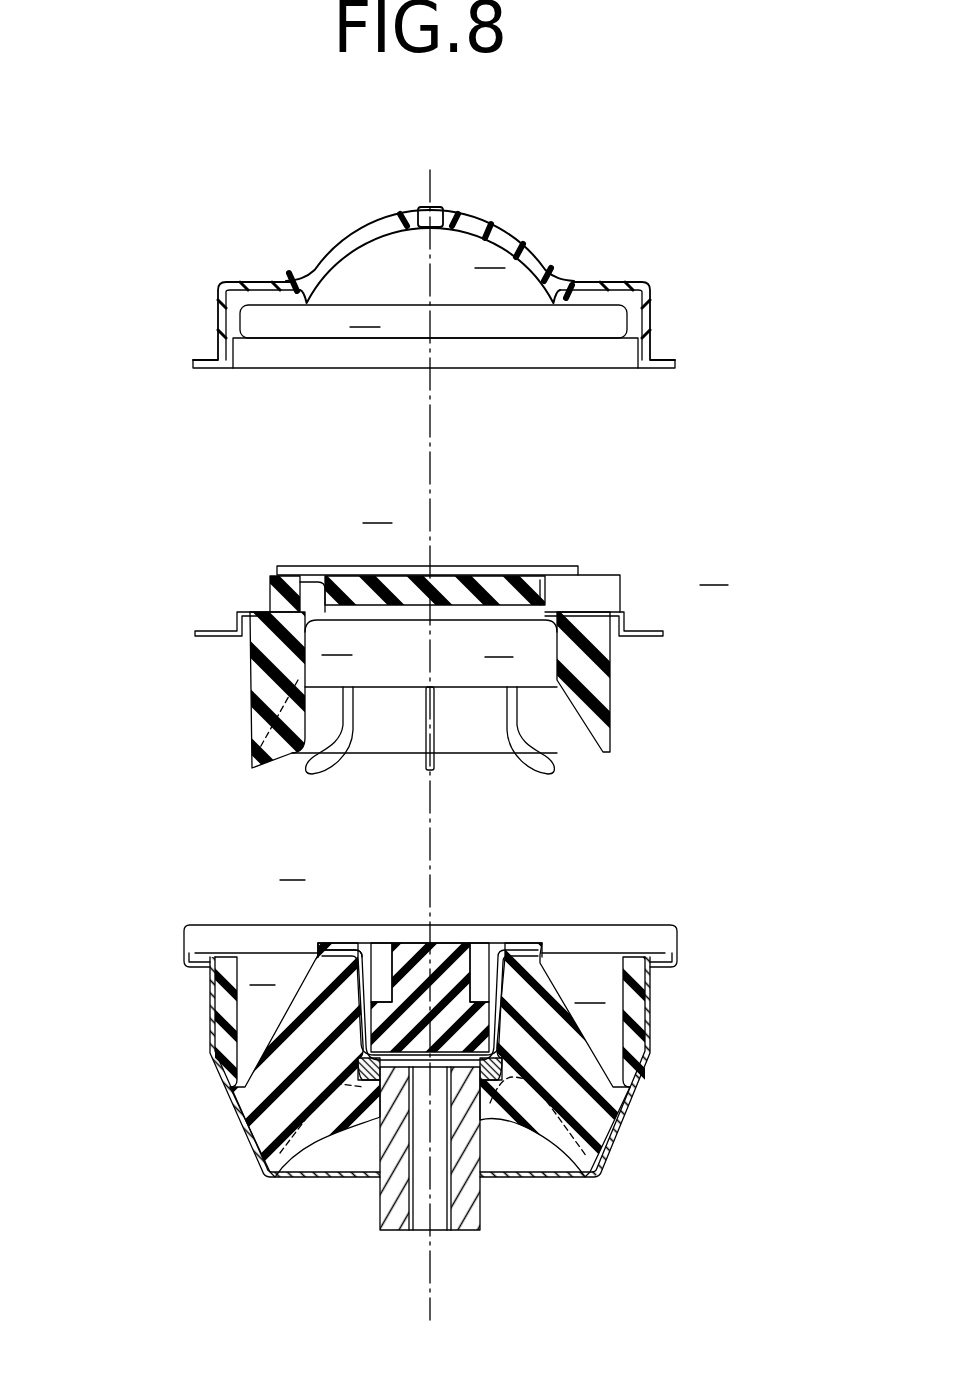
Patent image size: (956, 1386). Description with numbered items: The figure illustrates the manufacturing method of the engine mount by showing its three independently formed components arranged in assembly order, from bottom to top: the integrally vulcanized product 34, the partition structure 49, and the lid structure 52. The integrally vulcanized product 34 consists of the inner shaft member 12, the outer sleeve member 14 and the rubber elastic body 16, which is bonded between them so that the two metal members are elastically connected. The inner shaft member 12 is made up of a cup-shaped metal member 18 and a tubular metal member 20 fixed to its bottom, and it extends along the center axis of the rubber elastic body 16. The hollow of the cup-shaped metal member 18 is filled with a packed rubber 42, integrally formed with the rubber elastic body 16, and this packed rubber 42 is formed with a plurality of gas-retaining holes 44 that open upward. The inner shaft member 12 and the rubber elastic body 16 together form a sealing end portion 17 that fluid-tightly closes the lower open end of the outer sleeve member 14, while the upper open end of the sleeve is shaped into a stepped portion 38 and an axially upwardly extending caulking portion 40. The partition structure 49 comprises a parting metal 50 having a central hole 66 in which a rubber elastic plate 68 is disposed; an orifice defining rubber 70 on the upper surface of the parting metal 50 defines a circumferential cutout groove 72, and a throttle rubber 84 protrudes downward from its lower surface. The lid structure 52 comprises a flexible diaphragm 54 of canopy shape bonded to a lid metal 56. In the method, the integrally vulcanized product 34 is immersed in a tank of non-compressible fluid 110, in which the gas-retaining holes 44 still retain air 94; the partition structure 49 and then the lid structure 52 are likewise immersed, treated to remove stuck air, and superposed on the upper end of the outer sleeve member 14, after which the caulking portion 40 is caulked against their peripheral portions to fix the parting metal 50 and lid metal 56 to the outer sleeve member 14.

The inner shaft member 12 is at (460, 1050).
The outer sleeve member 14 is at (668, 1048).
The rubber elastic body 16 is at (307, 1076).
The sealing end portion 17 is at (512, 925).
The cup-shaped metal member 18 is at (503, 1013).
The tubular metal member 20 is at (467, 1148).
The integrally vulcanized product 34 is at (731, 975).
The stepped portion 38 is at (203, 968).
The caulking portion 40 is at (664, 926).
The packed rubber 42 is at (432, 958).
The gas-retaining holes 44 is at (378, 968).
The partition structure 49 is at (433, 622).
The parting metal 50 is at (225, 643).
The lid structure 52 is at (422, 265).
The flexible diaphragm 54 is at (510, 235).
The lid metal 56 is at (220, 326).
The central hole 66 is at (345, 583).
The rubber elastic plate 68 is at (446, 594).
The orifice defining rubber 70 is at (301, 588).
The cutout groove 72 is at (262, 583).
The throttle rubber 84 is at (580, 672).
The air 94 is at (320, 957).
The non-compressible fluid 110 is at (746, 788).